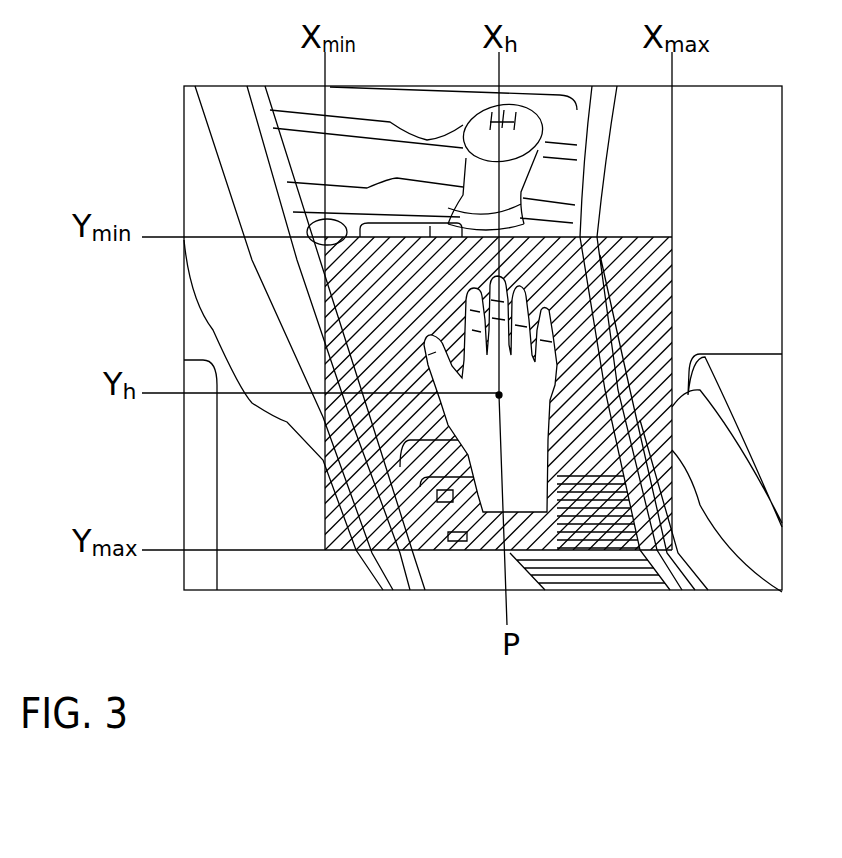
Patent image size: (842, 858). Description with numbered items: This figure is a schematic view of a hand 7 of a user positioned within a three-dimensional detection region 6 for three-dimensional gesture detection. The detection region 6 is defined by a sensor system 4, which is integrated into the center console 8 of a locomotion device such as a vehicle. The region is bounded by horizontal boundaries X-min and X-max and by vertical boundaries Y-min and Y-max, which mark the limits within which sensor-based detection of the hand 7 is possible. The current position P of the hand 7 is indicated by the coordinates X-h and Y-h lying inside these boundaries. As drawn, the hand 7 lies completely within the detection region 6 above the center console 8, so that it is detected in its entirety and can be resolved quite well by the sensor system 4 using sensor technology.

The sensor system 4 is at (424, 406).
The 3D-detection region 6 is at (356, 550).
The hand 7 is at (535, 467).
The center console 8 is at (307, 218).